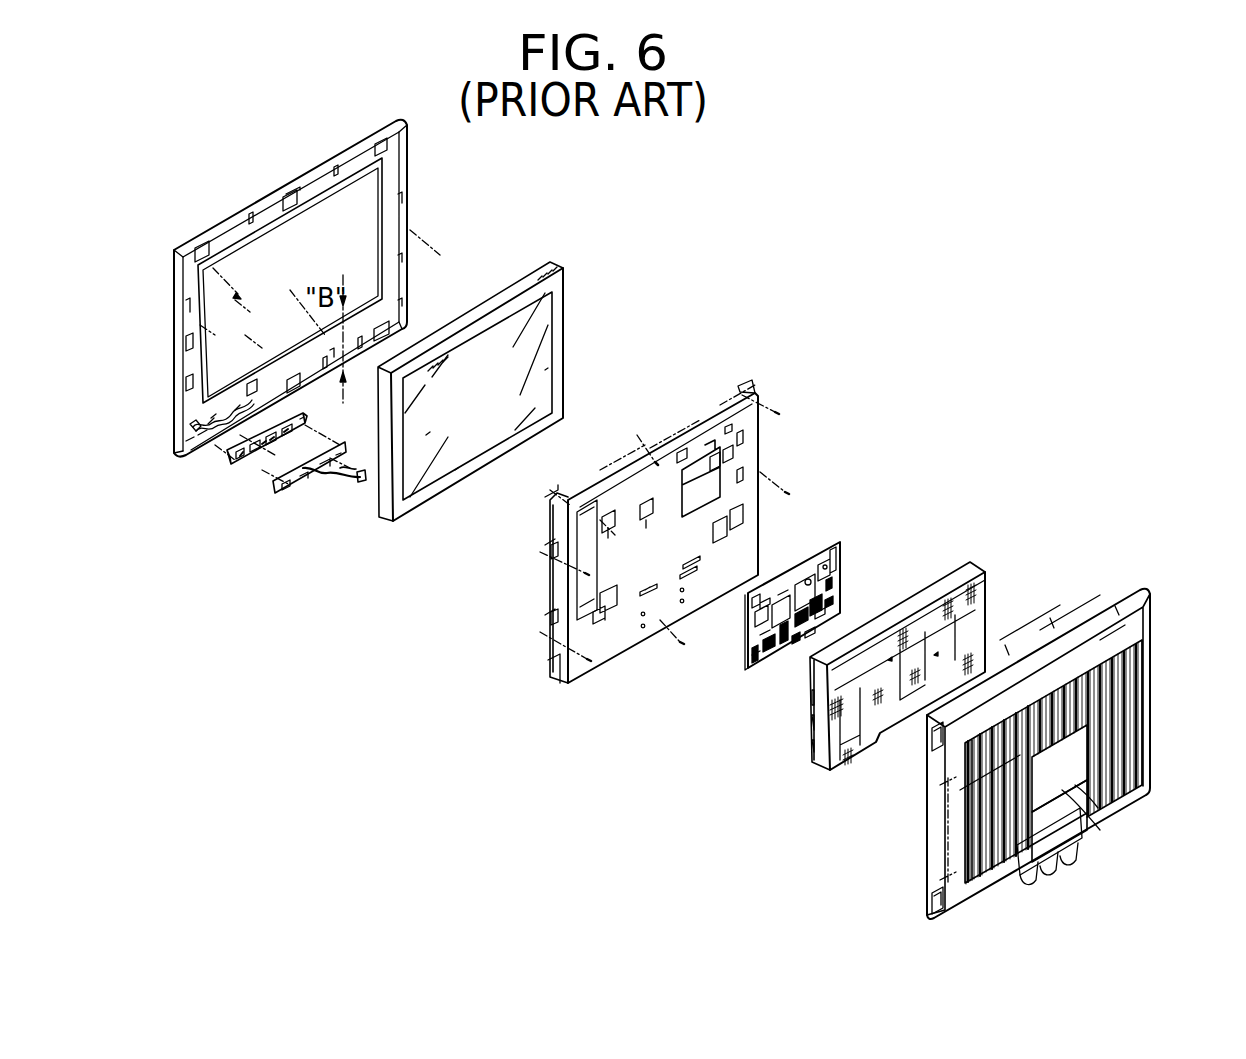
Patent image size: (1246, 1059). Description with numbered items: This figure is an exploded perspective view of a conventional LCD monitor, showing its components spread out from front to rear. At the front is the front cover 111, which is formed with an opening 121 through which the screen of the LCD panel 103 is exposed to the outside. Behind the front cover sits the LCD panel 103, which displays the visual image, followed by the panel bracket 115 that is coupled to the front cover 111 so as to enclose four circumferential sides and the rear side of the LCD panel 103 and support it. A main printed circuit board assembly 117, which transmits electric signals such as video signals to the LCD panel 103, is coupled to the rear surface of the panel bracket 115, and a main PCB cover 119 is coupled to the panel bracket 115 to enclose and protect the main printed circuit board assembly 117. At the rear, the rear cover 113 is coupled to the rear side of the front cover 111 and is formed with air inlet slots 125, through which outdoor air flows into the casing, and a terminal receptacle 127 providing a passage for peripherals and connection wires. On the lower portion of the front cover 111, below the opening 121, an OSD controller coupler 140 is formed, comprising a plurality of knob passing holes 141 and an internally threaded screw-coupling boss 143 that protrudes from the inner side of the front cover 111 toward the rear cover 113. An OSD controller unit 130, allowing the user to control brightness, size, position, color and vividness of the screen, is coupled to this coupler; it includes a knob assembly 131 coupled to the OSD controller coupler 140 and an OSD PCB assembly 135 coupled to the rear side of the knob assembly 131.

The LCD panel 103 is at (547, 327).
The front cover 111 is at (228, 220).
The rear cover 113 is at (1074, 718).
The panel bracket 115 is at (752, 468).
The main printed circuit board assembly 117 is at (843, 557).
The main PCB cover 119 is at (988, 602).
The opening 121 is at (380, 236).
The air inlet slots 125 is at (1142, 710).
The terminal receptacle 127 is at (1080, 780).
The OSD controller unit 130 is at (290, 520).
The knob assembly 131 is at (250, 462).
The OSD PCB assembly 135 is at (303, 480).
The OSD controller coupler 140 is at (200, 492).
The knob passing holes 141 is at (215, 448).
The screw-coupling boss 143 is at (205, 446).